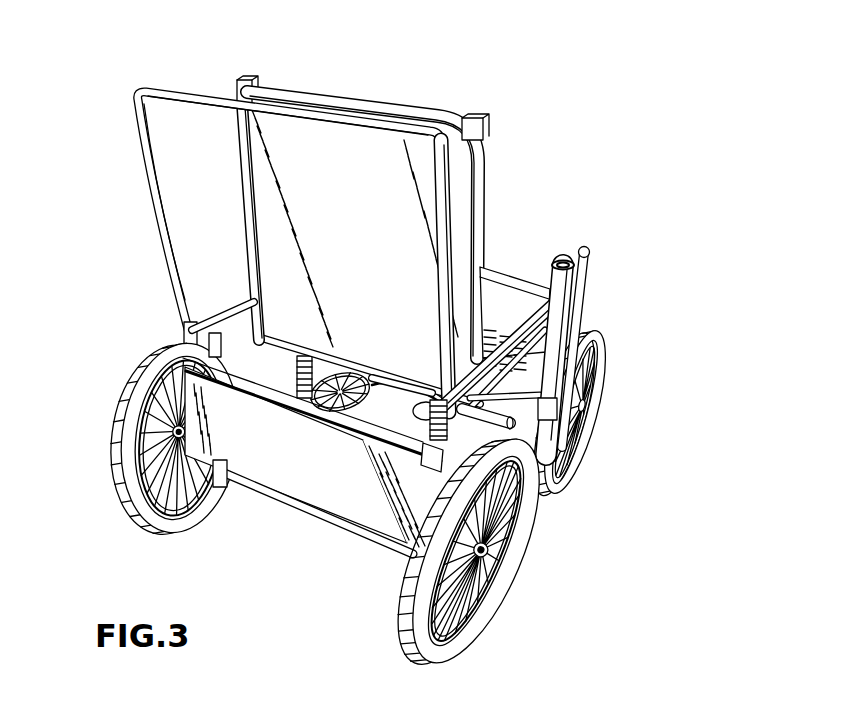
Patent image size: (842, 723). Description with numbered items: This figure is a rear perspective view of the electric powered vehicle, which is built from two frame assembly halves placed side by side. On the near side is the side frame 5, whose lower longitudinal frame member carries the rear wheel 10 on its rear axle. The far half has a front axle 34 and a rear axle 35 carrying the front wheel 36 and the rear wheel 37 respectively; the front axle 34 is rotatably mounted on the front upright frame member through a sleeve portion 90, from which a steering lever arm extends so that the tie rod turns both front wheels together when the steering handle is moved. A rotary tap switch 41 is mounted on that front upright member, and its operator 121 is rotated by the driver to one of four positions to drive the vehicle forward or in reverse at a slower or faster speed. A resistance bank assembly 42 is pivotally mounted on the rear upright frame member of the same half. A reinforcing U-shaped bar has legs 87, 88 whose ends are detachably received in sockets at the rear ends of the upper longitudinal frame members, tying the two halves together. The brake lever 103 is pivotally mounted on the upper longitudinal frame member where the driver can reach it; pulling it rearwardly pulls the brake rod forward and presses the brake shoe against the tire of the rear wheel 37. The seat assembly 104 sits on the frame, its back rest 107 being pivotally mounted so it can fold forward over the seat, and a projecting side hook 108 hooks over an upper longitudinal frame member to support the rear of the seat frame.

The rear wheel 10 is at (135, 409).
The side frame 5 is at (246, 384).
The front axle 34 is at (614, 423).
The rear axle 35 is at (498, 559).
The front wheel 36 is at (598, 404).
The rear wheel 37 is at (468, 632).
The rotary tap switch 41 is at (615, 328).
The resistance bank assembly 42 is at (333, 458).
The leg of re-inforcing U-shaped bar member 87 is at (158, 206).
The leg of re-inforcing U-shaped bar member 88 is at (433, 181).
The sleeve portion 90 is at (578, 329).
The brake lever 103 is at (578, 273).
The seat assembly 104 is at (512, 294).
The back rest 107 is at (389, 108).
The side hook 108 is at (250, 300).
The operator 121 is at (571, 252).